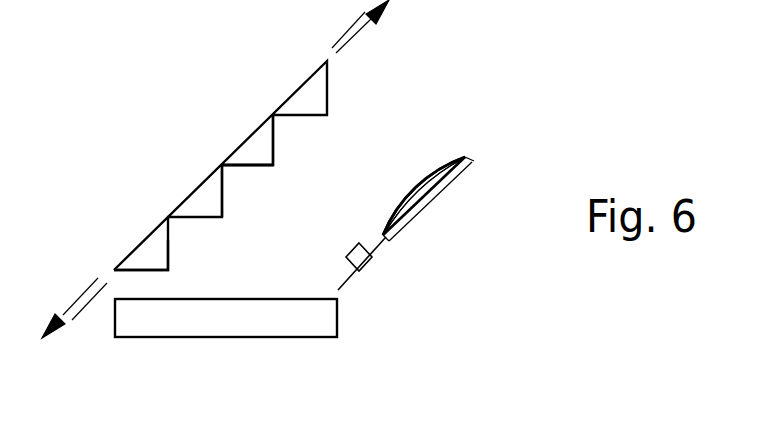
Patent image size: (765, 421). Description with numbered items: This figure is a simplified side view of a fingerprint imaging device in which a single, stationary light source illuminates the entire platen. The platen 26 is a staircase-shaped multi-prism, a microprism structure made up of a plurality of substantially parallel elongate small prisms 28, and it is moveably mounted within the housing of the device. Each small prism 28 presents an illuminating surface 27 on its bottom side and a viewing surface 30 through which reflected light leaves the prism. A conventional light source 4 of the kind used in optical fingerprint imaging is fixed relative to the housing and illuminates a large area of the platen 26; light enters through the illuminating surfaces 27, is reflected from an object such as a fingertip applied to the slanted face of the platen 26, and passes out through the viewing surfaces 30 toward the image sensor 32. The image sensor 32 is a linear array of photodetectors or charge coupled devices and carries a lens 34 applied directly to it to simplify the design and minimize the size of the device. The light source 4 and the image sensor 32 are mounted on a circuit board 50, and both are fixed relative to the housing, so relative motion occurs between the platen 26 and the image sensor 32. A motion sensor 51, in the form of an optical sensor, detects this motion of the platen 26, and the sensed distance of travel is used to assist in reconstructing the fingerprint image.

The light source 4 is at (210, 328).
The platen 26 is at (198, 165).
The illuminating surface 27 is at (143, 270).
The small prism 28 is at (211, 96).
The viewing surface 30 is at (274, 155).
The image sensor 32 is at (454, 210).
The lens 34 is at (422, 188).
The circuit board 50 is at (424, 295).
The motion sensor 51 is at (367, 262).